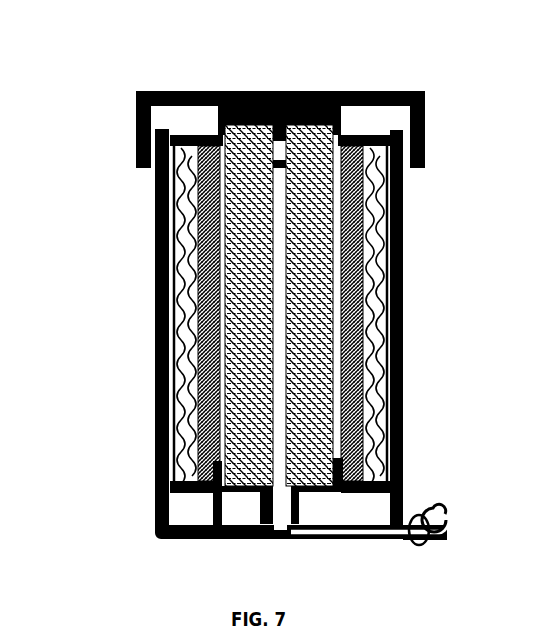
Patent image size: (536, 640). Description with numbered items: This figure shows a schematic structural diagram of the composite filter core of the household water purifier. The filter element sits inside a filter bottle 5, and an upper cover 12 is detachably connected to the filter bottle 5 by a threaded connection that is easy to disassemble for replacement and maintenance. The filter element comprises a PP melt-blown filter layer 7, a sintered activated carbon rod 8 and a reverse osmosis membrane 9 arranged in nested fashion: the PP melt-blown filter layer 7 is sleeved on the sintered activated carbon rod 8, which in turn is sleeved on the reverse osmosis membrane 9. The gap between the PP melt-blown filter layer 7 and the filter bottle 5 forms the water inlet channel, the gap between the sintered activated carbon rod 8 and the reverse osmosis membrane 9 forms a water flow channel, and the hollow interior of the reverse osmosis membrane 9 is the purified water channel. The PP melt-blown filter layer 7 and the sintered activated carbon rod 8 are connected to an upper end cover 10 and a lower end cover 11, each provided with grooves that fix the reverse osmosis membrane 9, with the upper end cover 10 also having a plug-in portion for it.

The filter bottle 5 is at (147, 212).
The PP melt-blown filter layer 7 is at (173, 272).
The sintered activated carbon rod 8 is at (200, 277).
The reverse osmosis membrane 9 is at (218, 325).
The upper end cover 10 is at (303, 84).
The lower end cover 11 is at (326, 493).
The upper cover 12 is at (170, 84).